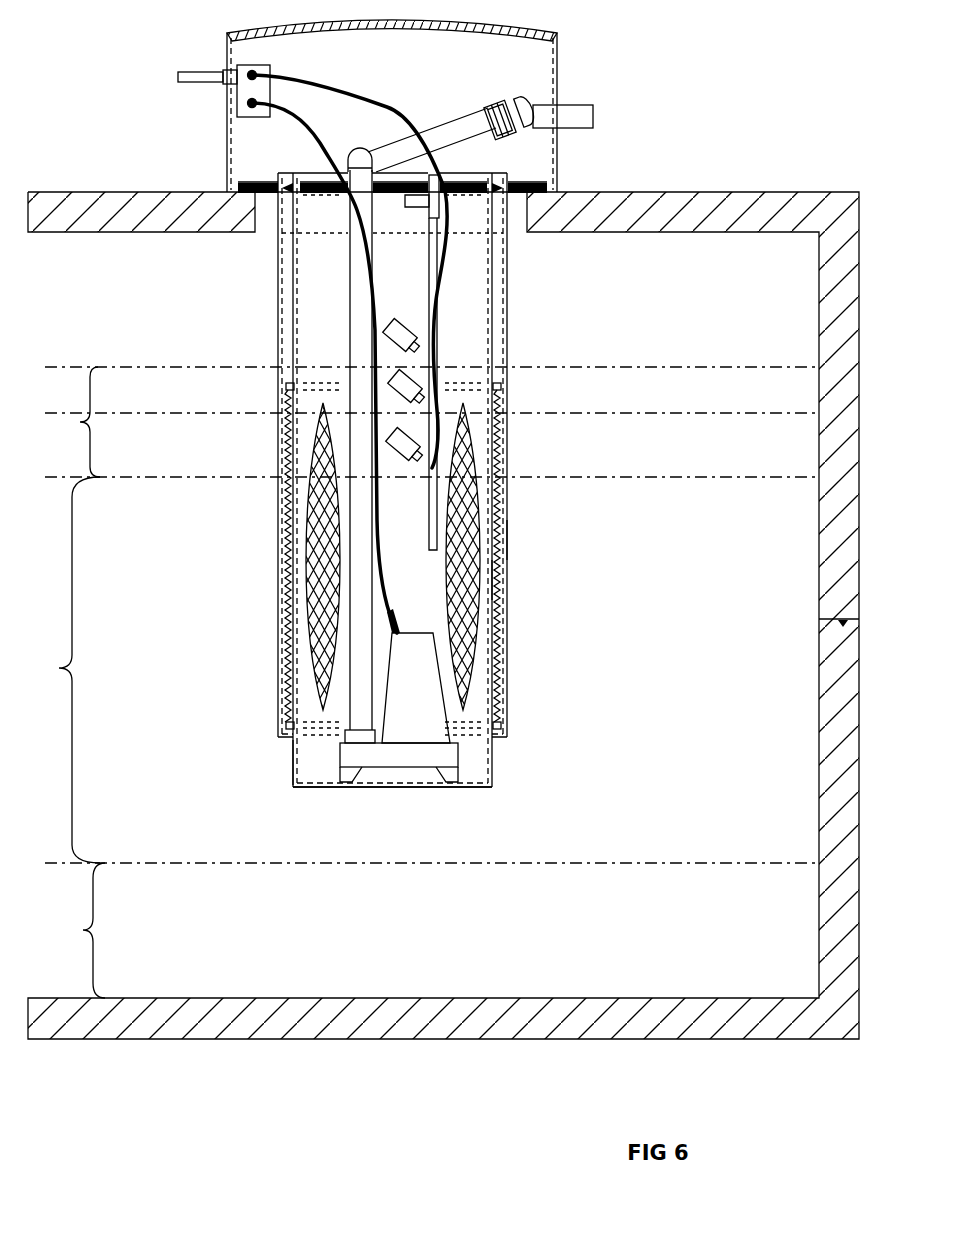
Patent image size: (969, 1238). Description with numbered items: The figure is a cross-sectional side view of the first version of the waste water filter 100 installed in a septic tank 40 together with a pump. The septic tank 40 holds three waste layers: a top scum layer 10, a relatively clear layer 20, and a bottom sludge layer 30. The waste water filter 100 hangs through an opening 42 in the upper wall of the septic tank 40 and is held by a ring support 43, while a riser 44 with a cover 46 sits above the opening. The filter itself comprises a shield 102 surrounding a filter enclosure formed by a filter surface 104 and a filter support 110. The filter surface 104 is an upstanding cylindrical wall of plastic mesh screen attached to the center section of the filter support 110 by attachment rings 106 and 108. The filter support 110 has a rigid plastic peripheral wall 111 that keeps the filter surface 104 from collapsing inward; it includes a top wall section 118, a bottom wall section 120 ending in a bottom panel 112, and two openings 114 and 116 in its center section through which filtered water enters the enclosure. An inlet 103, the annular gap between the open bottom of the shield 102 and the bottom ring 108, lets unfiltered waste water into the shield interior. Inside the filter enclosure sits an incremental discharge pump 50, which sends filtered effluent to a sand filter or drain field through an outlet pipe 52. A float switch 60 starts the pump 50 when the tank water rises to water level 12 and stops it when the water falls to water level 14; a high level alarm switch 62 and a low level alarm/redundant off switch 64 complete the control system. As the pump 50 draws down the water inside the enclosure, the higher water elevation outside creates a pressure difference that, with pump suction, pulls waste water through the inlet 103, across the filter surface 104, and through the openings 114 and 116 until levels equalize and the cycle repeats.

The top scum layer 10 is at (73, 422).
The water level 12 is at (183, 373).
The water level 14 is at (188, 420).
The relatively clear layer 20 is at (421, 670).
The bottom sludge layer 30 is at (432, 930).
The septic tank 40 is at (743, 210).
The opening 42 is at (552, 197).
The ring support 43 is at (537, 180).
The riser 44 is at (557, 87).
The cover 46 is at (383, 32).
The incremental discharge pump 50 is at (353, 752).
The outlet pipe 52 is at (362, 598).
The float switch 60 is at (405, 383).
The high level alarm switch 62 is at (385, 332).
The low level alarm/redundant off switch 64 is at (403, 455).
The waste water filter 100 is at (224, 342).
The shield 102 is at (508, 538).
The inlet 103 is at (503, 747).
The filter surface 104 is at (498, 497).
The attachment ring 106 is at (443, 278).
The attachment ring 108 is at (500, 727).
The filter support 110 is at (465, 327).
The peripheral wall 111 is at (495, 575).
The bottom panel 112 is at (403, 787).
The opening 114 is at (477, 642).
The opening 116 is at (310, 688).
The top wall section 118 is at (290, 265).
The bottom wall section 120 is at (295, 752).